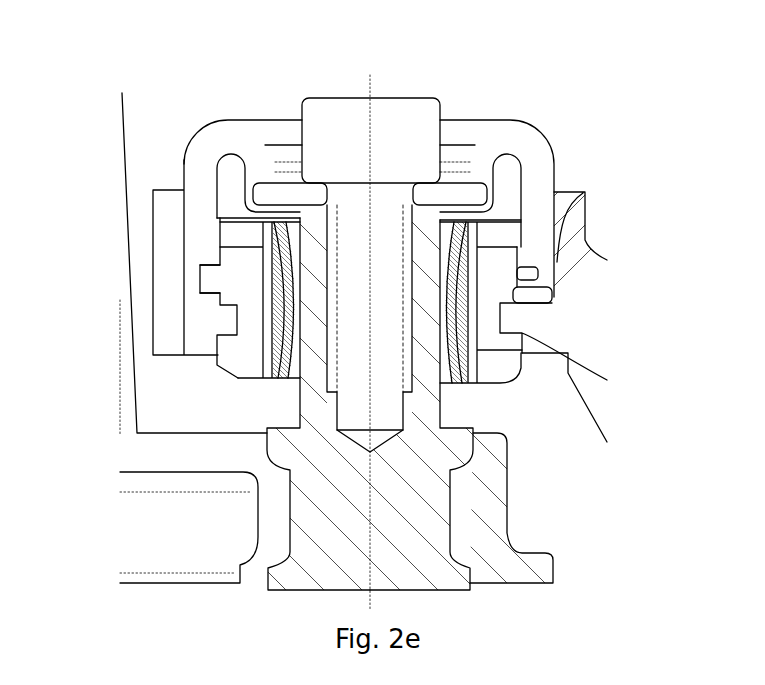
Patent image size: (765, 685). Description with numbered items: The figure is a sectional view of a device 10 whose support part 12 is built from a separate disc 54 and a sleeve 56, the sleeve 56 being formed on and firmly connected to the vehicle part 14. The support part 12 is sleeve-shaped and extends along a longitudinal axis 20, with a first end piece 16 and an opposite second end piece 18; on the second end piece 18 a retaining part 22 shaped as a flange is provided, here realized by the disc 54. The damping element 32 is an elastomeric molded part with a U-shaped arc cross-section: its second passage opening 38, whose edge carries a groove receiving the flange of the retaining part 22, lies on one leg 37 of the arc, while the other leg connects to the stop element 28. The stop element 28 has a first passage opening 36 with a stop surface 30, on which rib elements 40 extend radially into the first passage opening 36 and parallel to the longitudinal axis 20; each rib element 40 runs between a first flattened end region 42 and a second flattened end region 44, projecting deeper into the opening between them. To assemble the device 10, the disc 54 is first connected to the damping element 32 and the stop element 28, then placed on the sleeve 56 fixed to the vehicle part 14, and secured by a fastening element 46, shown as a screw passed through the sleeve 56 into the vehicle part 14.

The device 10 is at (562, 83).
The support part 12 is at (553, 297).
The vehicle part 14 is at (160, 523).
The first end piece 16 is at (425, 410).
The second end piece 18 is at (228, 218).
The longitudinal axis 20 is at (370, 140).
The retaining part 22 is at (285, 182).
The stop element 28 is at (490, 322).
The stop surface 30 is at (200, 293).
The damping element 32 is at (536, 142).
The first passage opening 36 is at (200, 432).
The leg of the U-shaped arc 37 is at (453, 180).
The second passage opening 38 is at (273, 190).
The rib element 40 is at (222, 330).
The first flattened end region 42 is at (222, 247).
The second flattened end region 44 is at (237, 365).
The fastening element 46 is at (343, 113).
The disc 54 is at (262, 196).
The sleeve 56 is at (425, 458).